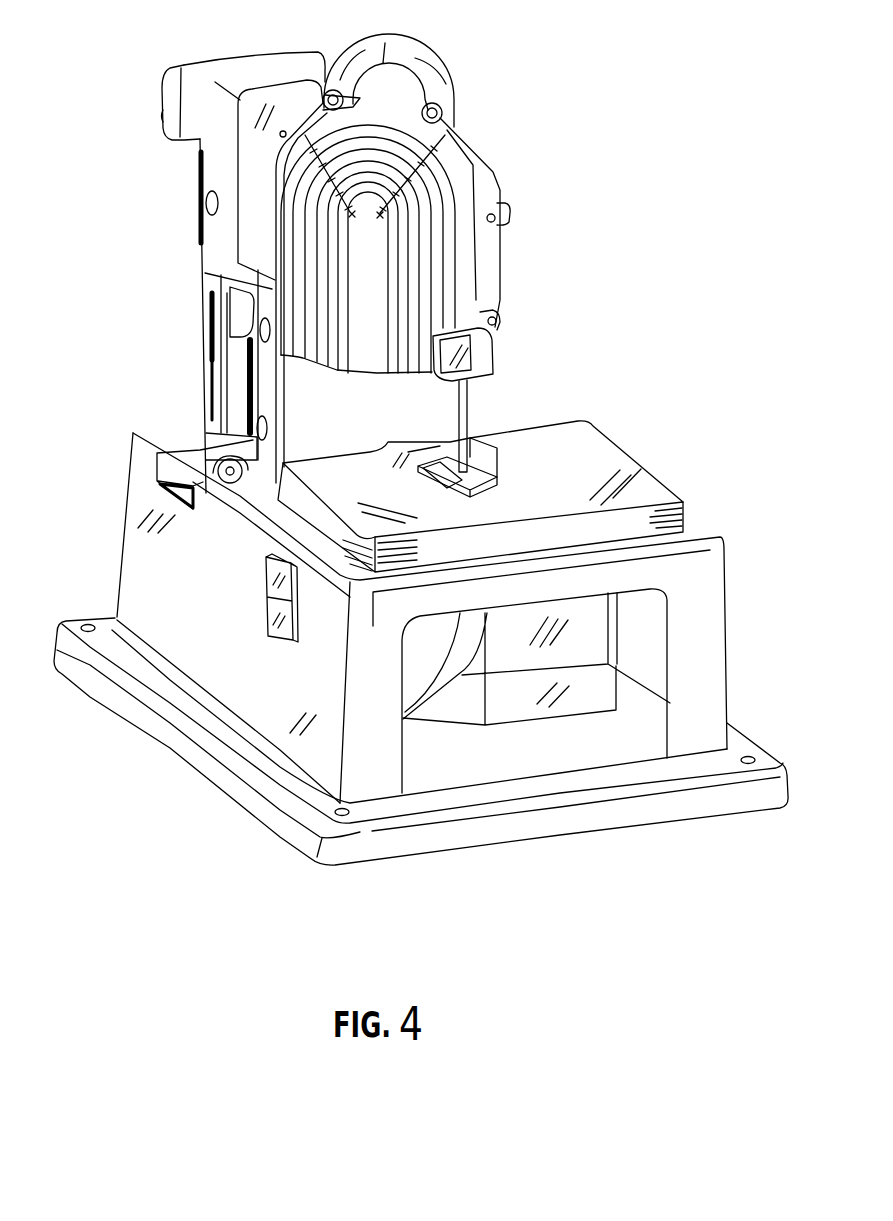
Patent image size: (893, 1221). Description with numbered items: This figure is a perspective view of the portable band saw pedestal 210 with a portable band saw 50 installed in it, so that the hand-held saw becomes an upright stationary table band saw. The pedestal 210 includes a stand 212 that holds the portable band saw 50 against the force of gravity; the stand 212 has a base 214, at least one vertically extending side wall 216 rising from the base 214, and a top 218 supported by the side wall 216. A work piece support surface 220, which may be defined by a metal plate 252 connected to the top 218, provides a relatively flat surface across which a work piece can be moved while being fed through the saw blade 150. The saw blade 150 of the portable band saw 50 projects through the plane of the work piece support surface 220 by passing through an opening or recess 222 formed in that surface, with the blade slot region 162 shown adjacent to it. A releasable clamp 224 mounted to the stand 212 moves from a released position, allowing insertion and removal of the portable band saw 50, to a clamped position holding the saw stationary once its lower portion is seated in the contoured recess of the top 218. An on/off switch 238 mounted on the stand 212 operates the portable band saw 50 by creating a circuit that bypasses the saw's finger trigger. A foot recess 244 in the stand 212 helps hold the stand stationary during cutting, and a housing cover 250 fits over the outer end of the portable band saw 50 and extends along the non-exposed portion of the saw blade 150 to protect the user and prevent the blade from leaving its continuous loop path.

The portable band saw pedestal 210 is at (655, 227).
The stand 212 is at (80, 612).
The base 214 is at (110, 648).
The side wall 216 is at (727, 630).
The top 218 is at (188, 672).
The work piece support surface 220 is at (587, 452).
The opening or recess 222 is at (447, 458).
The releasable clamp 224 is at (184, 460).
The on/off switch 238 is at (283, 521).
The foot recess 244 is at (663, 725).
The housing cover 250 is at (476, 126).
The metal plate 252 is at (683, 513).
The portable band saw 50 is at (199, 267).
The saw blade 150 is at (470, 388).
The blade slot 162 is at (404, 454).